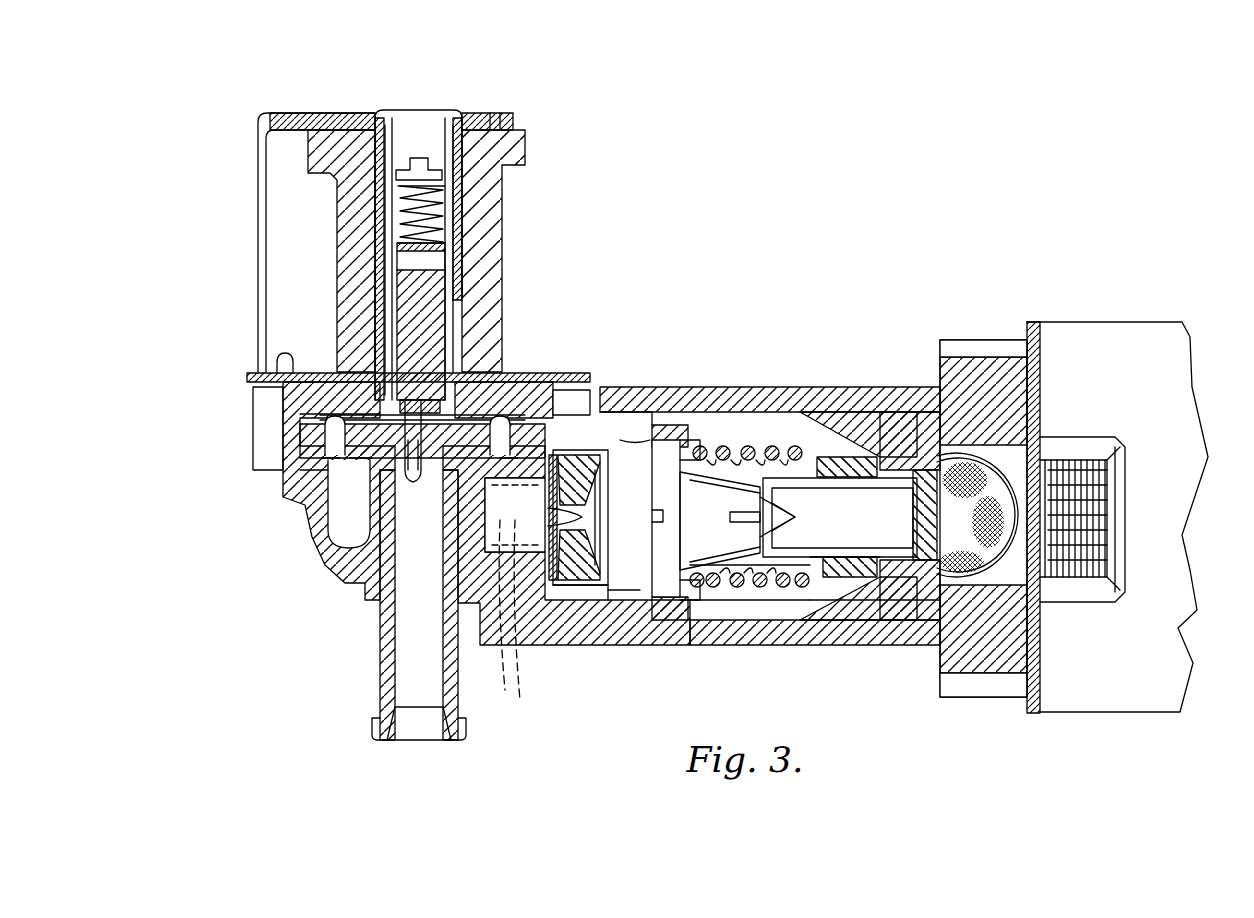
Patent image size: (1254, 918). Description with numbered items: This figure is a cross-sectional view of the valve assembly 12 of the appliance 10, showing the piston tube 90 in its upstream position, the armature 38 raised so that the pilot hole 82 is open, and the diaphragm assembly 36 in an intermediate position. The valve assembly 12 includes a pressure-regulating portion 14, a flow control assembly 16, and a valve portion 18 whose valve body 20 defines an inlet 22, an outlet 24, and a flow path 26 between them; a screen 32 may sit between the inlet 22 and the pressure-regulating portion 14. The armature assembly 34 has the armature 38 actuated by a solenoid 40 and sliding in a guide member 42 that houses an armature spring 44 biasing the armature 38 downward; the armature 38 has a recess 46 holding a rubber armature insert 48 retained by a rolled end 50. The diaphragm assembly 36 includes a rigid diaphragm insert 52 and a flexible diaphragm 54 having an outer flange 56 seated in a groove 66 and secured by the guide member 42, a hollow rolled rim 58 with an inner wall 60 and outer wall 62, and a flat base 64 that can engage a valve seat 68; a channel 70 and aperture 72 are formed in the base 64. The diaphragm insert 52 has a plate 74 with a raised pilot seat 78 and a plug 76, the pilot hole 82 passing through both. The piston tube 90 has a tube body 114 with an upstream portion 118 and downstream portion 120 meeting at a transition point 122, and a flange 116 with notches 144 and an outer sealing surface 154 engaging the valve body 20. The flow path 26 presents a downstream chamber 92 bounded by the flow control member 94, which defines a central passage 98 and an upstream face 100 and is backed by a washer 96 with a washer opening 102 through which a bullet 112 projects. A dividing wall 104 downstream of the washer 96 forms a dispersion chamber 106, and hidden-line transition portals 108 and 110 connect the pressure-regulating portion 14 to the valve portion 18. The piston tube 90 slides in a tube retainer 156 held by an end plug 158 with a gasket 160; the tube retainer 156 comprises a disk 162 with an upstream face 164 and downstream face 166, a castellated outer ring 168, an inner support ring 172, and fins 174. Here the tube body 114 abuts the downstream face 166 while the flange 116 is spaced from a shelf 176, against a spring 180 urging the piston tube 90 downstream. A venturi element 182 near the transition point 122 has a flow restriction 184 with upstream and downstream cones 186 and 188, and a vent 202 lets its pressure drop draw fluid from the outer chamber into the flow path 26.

The appliance 10 is at (990, 140).
The valve assembly 12 is at (905, 240).
The pressure-regulating portion 14 is at (752, 272).
The flow control assembly 16 is at (628, 455).
The valve portion 18 is at (515, 212).
The valve body 20 is at (725, 388).
The inlet 22 is at (1032, 512).
The outlet 24 is at (381, 738).
The flow path 26 is at (420, 678).
The screen 32 is at (937, 493).
The armature assembly 34 is at (515, 246).
The diaphragm assembly 36 is at (330, 430).
The armature 38 is at (405, 283).
The solenoid 40 is at (497, 268).
The guide member 42 is at (432, 165).
The armature spring 44 is at (440, 195).
The recess 46 is at (412, 400).
The armature insert 48 is at (407, 400).
The rolled end 50 is at (395, 420).
The diaphragm insert 52 is at (330, 545).
The diaphragm 54 is at (335, 395).
The outer flange 56 is at (540, 445).
The hollow rolled rim 58 is at (520, 405).
The inner wall 60 is at (505, 400).
The outer wall 62 is at (530, 385).
The base 64 is at (580, 416).
The groove 66 is at (322, 470).
The valve seat 68 is at (345, 577).
The channel 70 is at (367, 458).
The aperture 72 is at (445, 545).
The plate 74 is at (478, 400).
The plug 76 is at (385, 592).
The pilot seat 78 is at (380, 415).
The pilot hole 82 is at (413, 488).
The piston tube 90 is at (790, 445).
The downstream chamber 92 is at (660, 440).
The flow control member 94 is at (662, 440).
The washer 96 is at (580, 605).
The central passage 98 is at (606, 509).
The upstream face 100 is at (640, 620).
The washer opening 102 is at (600, 600).
The dividing wall 104 is at (560, 590).
The dispersion chamber 106 is at (558, 600).
The transition portal 108 is at (493, 617).
The transition portal 110 is at (512, 638).
The bullet 112 is at (587, 525).
The tube body 114 is at (773, 478).
The flange 116 is at (690, 445).
The upstream portion 118 is at (848, 440).
The downstream portion 120 is at (705, 577).
The transition point 122 is at (760, 587).
The notches 144 is at (692, 525).
The outer sealing surface 154 is at (690, 645).
The tube retainer 156 is at (985, 612).
The end plug 158 is at (870, 600).
The gasket 160 is at (830, 605).
The disk 162 is at (950, 625).
The upstream face 164 is at (1025, 465).
The downstream face 166 is at (945, 445).
The castellated outer ring 168 is at (1028, 443).
The inner support ring 172 is at (855, 565).
The fins 174 is at (897, 460).
The shelf 176 is at (615, 600).
The spring 180 is at (815, 478).
The venturi element 182 is at (810, 506).
The flow restriction 184 is at (810, 528).
The upstream cone 186 is at (770, 575).
The downstream cone 188 is at (748, 572).
The vent 202 is at (755, 500).